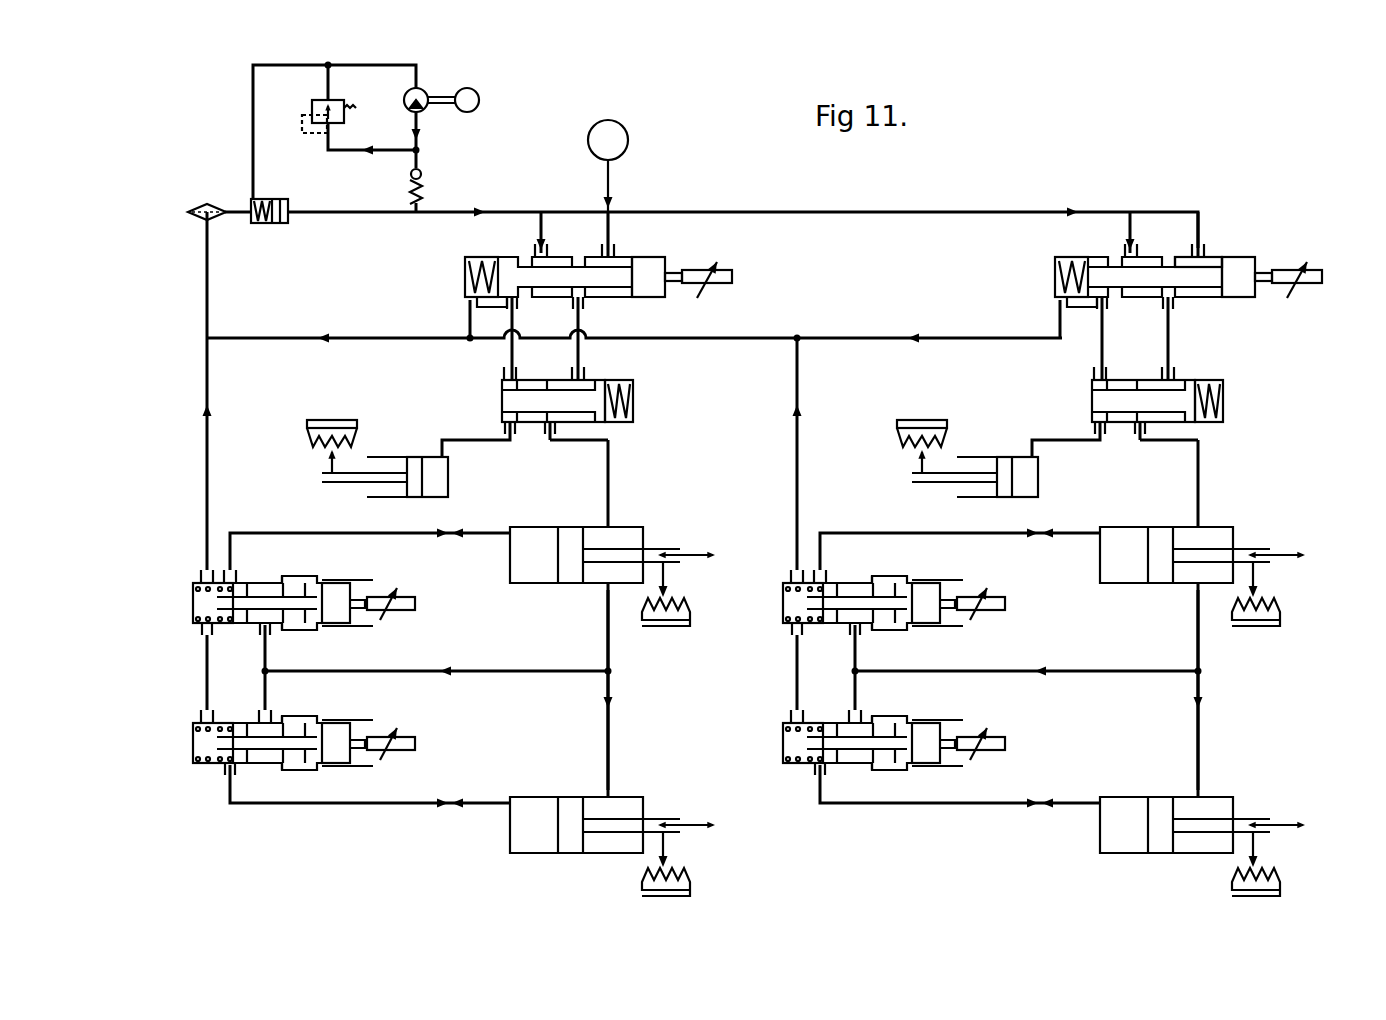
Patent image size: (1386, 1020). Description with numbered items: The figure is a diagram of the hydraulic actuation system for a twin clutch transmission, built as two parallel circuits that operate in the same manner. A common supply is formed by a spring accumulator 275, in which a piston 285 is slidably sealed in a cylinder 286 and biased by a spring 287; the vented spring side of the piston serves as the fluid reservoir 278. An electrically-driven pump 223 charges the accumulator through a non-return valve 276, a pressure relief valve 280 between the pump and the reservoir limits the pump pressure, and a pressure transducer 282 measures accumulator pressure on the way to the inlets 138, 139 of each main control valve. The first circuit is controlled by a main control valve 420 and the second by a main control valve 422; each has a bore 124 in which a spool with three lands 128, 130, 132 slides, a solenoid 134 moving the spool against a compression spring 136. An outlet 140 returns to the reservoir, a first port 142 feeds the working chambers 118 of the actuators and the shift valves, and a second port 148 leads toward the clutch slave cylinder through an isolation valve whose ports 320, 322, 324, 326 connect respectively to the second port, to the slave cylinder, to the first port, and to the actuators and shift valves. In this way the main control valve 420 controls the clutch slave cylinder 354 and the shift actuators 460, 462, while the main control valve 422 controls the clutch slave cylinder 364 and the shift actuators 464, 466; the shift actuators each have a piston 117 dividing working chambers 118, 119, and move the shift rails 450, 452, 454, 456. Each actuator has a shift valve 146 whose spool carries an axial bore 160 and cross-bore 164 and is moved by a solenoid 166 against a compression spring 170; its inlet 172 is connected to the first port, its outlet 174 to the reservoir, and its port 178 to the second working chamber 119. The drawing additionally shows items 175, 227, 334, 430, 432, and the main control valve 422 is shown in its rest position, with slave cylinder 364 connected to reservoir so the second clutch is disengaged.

The piston 117 is at (575, 585).
The working chamber 118 is at (620, 537).
The working chamber 119 is at (535, 585).
The bore 124 is at (1225, 258).
The land 128 is at (652, 285).
The land 130 is at (580, 258).
The land 132 is at (1088, 256).
The solenoid 134 is at (718, 272).
The compression spring 136 is at (476, 268).
The inlet 138 is at (538, 252).
The inlet 139 is at (612, 250).
The outlet 140 is at (468, 306).
The first port 142 is at (582, 305).
The shift valve 146 is at (345, 630).
The second port 148 is at (516, 305).
The axial bore 160 is at (200, 605).
The cross-bore 164 is at (320, 590).
The solenoid 166 is at (405, 600).
The compression spring 170 is at (200, 590).
The inlet 172 is at (272, 634).
The outlet 174 is at (203, 575).
The valve port 175 is at (203, 628).
The port 178 is at (240, 580).
The electrically-driven pump 223 is at (425, 92).
The reservoir 227 is at (670, 624).
The spring accumulator 275 is at (274, 224).
The non-return valve 276 is at (425, 190).
The fluid reservoir 278 is at (250, 203).
The pressure relief valve 280 is at (312, 104).
The pressure transducer 282 is at (622, 137).
The piston 285 is at (278, 199).
The cylinder 286 is at (290, 221).
The spring 287 is at (263, 224).
The port 320 is at (503, 382).
The port 322 is at (503, 420).
The port 324 is at (582, 374).
The port 326 is at (548, 430).
The drain reservoir 334 is at (325, 443).
The clutch slave cylinder 354 is at (440, 478).
The clutch slave cylinder 364 is at (1030, 478).
The main control valve 420 is at (712, 294).
The main control valve 422 is at (1302, 294).
The pilot valve spring 430 is at (634, 410).
The pilot valve spring 432 is at (1224, 410).
The shift rail 450 is at (665, 545).
The shift rail 452 is at (668, 818).
The shift rail 454 is at (1255, 545).
The shift rail 456 is at (1258, 818).
The shift actuator 460 is at (590, 527).
The shift actuator 462 is at (590, 797).
The shift actuator 464 is at (1180, 527).
The shift actuator 466 is at (1180, 797).